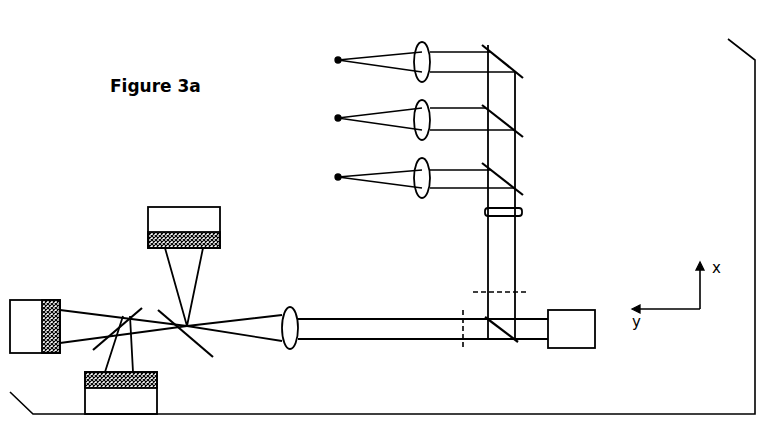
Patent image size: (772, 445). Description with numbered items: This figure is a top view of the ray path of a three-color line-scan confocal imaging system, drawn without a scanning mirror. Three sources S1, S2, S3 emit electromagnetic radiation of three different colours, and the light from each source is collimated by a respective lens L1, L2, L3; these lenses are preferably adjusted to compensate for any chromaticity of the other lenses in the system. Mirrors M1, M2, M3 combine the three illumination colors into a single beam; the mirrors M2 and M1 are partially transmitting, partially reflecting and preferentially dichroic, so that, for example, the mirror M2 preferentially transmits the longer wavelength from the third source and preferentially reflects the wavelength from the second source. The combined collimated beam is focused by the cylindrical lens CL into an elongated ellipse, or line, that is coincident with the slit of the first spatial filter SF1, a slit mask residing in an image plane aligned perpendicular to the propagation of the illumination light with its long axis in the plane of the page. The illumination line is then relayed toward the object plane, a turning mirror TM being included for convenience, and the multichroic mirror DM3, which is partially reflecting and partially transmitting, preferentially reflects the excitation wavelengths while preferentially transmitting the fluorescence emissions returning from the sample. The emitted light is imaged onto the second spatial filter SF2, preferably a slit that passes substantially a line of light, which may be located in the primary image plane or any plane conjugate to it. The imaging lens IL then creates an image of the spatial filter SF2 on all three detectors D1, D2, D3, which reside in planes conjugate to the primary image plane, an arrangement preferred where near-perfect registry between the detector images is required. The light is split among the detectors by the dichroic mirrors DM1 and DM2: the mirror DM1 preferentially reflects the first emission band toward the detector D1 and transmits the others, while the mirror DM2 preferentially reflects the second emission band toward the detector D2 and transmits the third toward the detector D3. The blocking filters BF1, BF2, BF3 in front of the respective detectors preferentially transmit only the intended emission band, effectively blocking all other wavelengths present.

The source S1 is at (332, 165).
The source S2 is at (332, 109).
The source S3 is at (332, 48).
The collimating lens L1 is at (428, 173).
The collimating lens L2 is at (428, 115).
The collimating lens L3 is at (428, 56).
The mirror M1 is at (487, 179).
The mirror M2 is at (487, 121).
The mirror M3 is at (487, 61).
The cylindrical lens CL is at (486, 214).
The first spatial filter SF1 is at (516, 294).
The second spatial filter SF2 is at (439, 322).
The dichroic mirror DM1 is at (202, 340).
The dichroic mirror DM2 is at (117, 322).
The multichroic mirror DM3 is at (499, 343).
The turning mirror TM is at (580, 338).
The imaging lens IL is at (290, 317).
The detector D1 is at (184, 266).
The detector D2 is at (121, 365).
The detector D3 is at (98, 337).
The blocking filter BF1 is at (200, 243).
The blocking filter BF2 is at (135, 384).
The blocking filter BF3 is at (46, 317).